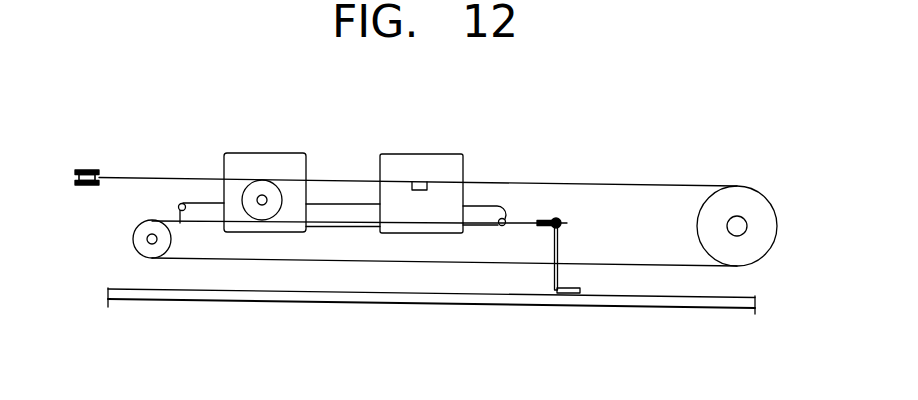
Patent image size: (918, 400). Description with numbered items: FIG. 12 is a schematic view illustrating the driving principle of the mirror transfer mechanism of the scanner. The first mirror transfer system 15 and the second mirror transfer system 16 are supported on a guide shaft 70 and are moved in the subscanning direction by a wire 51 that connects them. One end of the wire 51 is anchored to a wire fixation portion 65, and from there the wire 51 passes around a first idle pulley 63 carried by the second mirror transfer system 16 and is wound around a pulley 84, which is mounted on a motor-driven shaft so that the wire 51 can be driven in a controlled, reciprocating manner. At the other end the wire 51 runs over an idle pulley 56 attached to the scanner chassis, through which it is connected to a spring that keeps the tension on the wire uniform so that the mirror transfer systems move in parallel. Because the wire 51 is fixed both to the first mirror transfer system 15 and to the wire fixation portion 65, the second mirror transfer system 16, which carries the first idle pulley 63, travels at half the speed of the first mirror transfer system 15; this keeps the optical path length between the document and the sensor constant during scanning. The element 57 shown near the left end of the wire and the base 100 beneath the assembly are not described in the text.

The first mirror transfer system 15 is at (398, 160).
The second mirror transfer system 16 is at (250, 157).
The wire 51 is at (560, 182).
The idle pulley 56 is at (137, 240).
The belt clamp 57 is at (80, 170).
The first idle pulley 63 is at (268, 216).
The wire fixation portion 65 is at (542, 227).
The guide shaft 70 is at (482, 212).
The pulley 84 is at (747, 203).
The base plate 100 is at (237, 304).